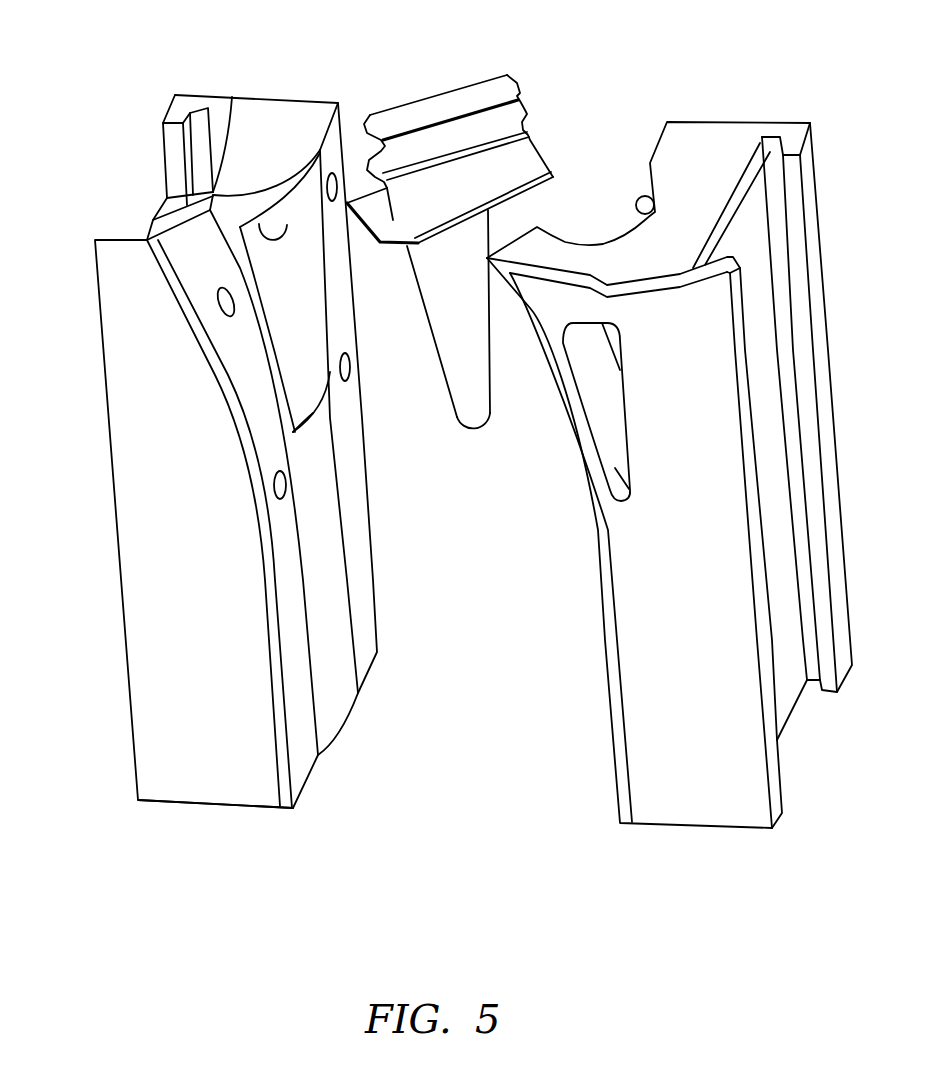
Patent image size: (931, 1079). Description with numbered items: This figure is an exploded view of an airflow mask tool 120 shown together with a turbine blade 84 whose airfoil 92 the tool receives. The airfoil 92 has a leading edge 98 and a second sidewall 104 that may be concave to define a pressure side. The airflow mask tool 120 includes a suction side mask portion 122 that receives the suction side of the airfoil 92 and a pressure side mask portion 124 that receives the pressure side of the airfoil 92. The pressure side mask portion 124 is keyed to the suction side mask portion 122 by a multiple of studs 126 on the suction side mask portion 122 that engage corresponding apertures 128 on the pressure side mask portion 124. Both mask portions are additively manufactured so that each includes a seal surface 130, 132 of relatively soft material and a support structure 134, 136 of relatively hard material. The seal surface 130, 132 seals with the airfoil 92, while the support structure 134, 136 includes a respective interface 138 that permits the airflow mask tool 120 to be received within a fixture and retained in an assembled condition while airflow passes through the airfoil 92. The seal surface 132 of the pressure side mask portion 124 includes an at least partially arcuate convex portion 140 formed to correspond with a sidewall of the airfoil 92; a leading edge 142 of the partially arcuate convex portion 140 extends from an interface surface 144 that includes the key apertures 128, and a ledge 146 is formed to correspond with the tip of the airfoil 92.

The blade 84 is at (581, 71).
The airfoil 92 is at (473, 420).
The leading edge 98 is at (415, 298).
The second sidewall 104 is at (477, 378).
The airflow mask tool 120 is at (96, 603).
The suction side mask portion 122 is at (670, 850).
The pressure side mask portion 124 is at (217, 830).
The studs 126 is at (636, 205).
The apertures 128 is at (341, 180).
The seal surface 130 is at (623, 768).
The seal surface 132 is at (338, 710).
The support structure 134 is at (757, 800).
The support structure 136 is at (157, 792).
The interface 138 is at (160, 170).
The partially arcuate convex portion 140 is at (310, 333).
The leading edge 142 is at (288, 225).
The interface surface 144 is at (250, 357).
The ledge 146 is at (313, 413).